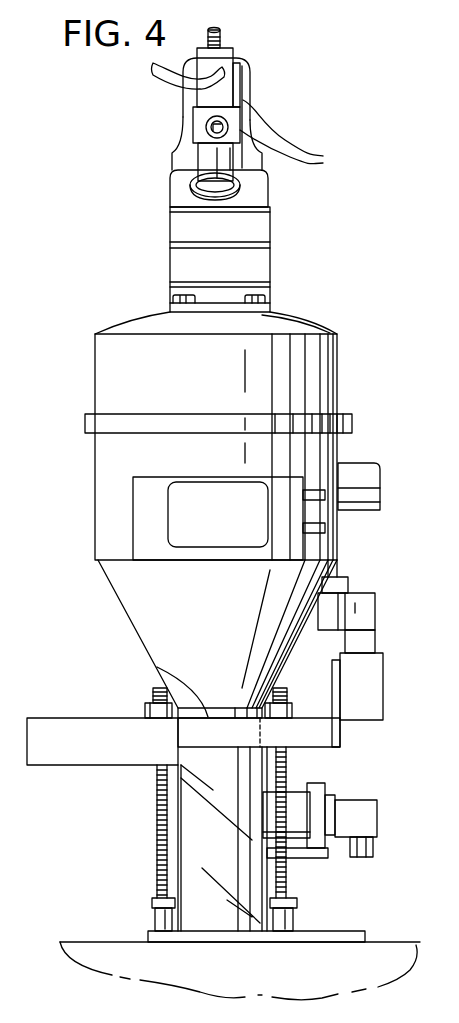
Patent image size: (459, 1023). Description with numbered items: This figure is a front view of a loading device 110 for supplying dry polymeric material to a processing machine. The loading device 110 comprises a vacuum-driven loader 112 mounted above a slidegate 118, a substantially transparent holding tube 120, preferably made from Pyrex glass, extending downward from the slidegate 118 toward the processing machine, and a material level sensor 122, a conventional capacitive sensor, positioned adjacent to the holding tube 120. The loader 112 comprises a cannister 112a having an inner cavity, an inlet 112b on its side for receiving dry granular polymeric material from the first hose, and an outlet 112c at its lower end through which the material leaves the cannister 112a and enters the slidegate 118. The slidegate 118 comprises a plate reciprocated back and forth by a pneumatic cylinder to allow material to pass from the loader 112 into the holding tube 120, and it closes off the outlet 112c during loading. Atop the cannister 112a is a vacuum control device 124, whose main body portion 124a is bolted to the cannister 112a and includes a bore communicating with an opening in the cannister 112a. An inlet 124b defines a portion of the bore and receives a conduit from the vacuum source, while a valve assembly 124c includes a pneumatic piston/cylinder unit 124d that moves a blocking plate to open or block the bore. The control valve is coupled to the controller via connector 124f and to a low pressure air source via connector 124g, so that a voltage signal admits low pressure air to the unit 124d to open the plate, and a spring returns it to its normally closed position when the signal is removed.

The loading device 110 is at (358, 390).
The vacuum-driven loader 112 is at (345, 343).
The cannister 112a is at (325, 448).
The inlet 112b is at (360, 497).
The outlet 112c is at (157, 667).
The slidegate 118 is at (388, 682).
The holding tube 120 is at (193, 845).
The material level sensor 122 is at (362, 818).
The vacuum control device 124 is at (277, 128).
The main body portion 124a is at (252, 237).
The inlet 124b is at (222, 97).
The valve assembly 124c is at (309, 137).
The pneumatic piston/cylinder unit 124d is at (207, 155).
The connector 124f is at (200, 96).
The connector 124g is at (222, 30).